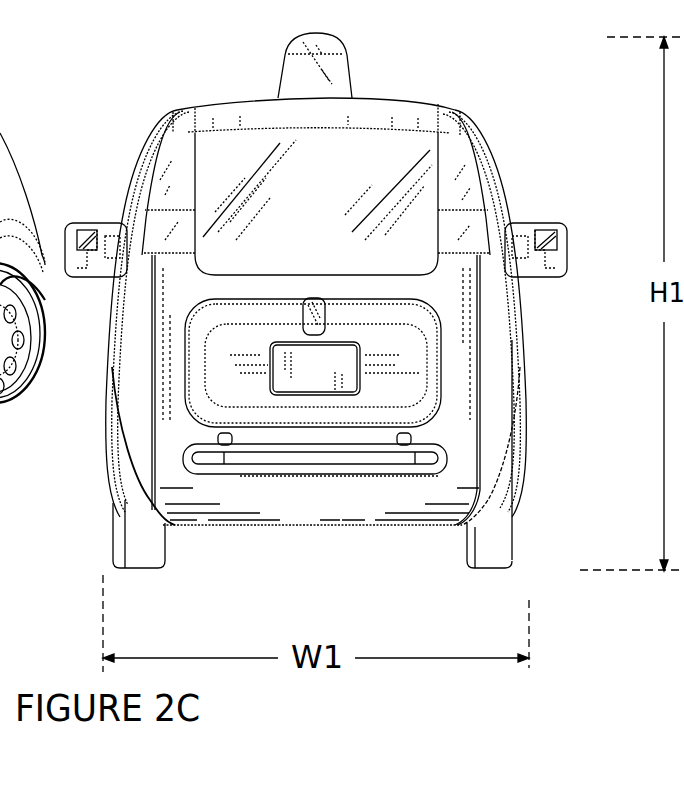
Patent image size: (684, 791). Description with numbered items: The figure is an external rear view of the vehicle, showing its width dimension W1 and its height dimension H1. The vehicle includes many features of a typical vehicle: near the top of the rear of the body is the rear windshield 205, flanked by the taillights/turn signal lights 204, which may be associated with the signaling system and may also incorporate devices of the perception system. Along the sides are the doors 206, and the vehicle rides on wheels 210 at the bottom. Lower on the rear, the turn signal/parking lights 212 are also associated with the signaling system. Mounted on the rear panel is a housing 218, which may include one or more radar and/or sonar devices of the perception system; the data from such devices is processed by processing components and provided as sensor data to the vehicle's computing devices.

The taillights/turn signal lights 204 is at (465, 182).
The rear windshield 205 is at (290, 216).
The doors 206 is at (530, 312).
The wheels 210 is at (515, 558).
The turn signal/parking lights 212 is at (432, 467).
The housing 218 is at (320, 346).